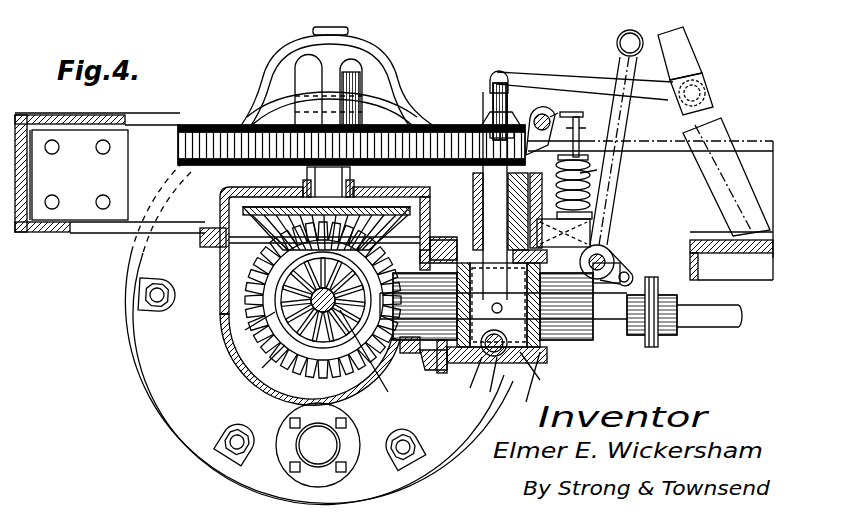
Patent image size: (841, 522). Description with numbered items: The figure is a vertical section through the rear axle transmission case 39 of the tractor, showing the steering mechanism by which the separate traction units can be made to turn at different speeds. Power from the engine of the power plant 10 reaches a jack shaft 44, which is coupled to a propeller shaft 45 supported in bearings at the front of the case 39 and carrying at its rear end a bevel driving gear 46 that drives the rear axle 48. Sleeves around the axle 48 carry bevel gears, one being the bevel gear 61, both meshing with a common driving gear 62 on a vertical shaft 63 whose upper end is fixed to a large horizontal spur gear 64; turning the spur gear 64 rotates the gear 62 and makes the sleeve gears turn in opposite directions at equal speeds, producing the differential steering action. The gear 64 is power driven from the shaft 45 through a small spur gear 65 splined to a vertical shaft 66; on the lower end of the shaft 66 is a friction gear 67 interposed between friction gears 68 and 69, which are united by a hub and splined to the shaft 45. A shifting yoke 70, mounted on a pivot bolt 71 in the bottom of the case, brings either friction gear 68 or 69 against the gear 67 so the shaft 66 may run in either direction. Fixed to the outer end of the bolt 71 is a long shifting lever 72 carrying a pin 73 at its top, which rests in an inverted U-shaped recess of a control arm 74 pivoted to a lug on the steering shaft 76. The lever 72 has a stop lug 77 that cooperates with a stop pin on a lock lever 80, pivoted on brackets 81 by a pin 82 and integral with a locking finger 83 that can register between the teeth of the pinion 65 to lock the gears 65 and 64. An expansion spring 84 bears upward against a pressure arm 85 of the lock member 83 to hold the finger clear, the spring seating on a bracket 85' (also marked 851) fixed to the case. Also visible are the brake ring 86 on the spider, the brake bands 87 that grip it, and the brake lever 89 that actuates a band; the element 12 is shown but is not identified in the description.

The power plant 10 is at (487, 382).
The bracket rail 12 is at (180, 120).
The rear axle transmission case 39 is at (228, 300).
The jack shaft 44 is at (740, 313).
The propeller shaft 45 is at (622, 332).
The bevel driving gear 46 is at (483, 348).
The rear axle 48 is at (245, 330).
The bevel gear 61 is at (262, 368).
The common driving gear 62 is at (232, 205).
The vertical shaft 63 is at (314, 30).
The horizontally disposed spur gear 64 is at (178, 148).
The small spur gear 65 is at (476, 194).
The vertical shaft 66 is at (483, 216).
The friction gear 67 is at (460, 250).
The friction gear 68 is at (440, 355).
The friction gear 69 is at (557, 348).
The shifting yoke 70 is at (537, 372).
The pivot bolt 71 is at (467, 379).
The shifting lever 72 is at (494, 106).
The pin 73 is at (495, 80).
The control arm 74 is at (612, 78).
The steering shaft 76 is at (684, 50).
The stop lug 77 is at (483, 126).
The lock lever 80 is at (547, 113).
The brackets 81 is at (580, 130).
The pin 82 is at (553, 113).
The locking finger 83 is at (560, 183).
The expansion spring 84 is at (597, 170).
The pressure arm 85 is at (625, 137).
The bracket 85' is at (637, 221).
The bracket 851 is at (615, 232).
The brake ring 86 is at (137, 326).
The brake bands 87 is at (524, 389).
The brake lever 89 is at (615, 197).